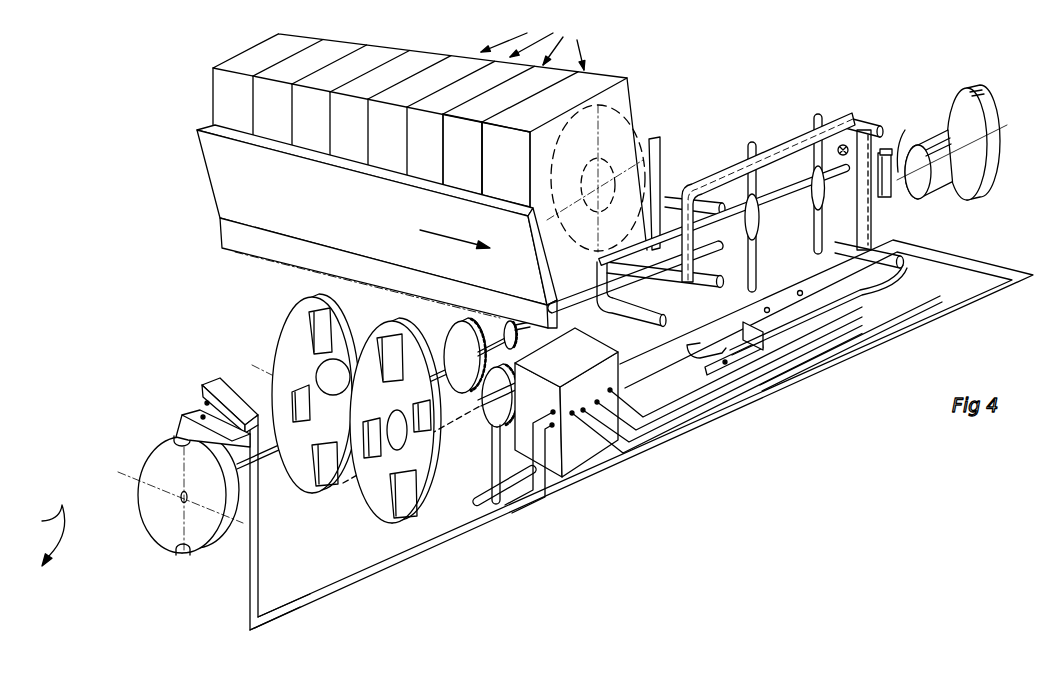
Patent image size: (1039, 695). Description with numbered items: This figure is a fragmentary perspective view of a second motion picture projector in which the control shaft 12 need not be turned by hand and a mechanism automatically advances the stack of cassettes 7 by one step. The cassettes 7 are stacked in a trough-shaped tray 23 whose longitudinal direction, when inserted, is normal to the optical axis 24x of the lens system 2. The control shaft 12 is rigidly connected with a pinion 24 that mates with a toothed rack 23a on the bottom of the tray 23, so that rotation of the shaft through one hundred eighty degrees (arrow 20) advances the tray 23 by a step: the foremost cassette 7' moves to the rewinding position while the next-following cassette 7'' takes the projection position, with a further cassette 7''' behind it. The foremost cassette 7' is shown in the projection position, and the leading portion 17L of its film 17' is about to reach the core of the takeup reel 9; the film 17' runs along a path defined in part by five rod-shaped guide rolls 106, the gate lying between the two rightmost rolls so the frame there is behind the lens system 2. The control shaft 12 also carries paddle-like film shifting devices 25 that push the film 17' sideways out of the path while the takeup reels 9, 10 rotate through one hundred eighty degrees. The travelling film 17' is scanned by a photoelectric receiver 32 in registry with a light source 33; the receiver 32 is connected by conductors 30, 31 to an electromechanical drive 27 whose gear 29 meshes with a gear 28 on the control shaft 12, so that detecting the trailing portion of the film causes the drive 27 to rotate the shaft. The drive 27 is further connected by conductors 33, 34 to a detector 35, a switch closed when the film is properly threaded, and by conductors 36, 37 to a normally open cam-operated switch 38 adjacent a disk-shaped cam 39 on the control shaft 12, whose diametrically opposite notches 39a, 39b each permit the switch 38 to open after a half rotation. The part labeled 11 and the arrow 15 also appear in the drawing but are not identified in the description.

The lens system 2 is at (988, 120).
The cassettes 7 is at (420, 105).
The foremost cassette 7' is at (595, 148).
The next-following cassette 7'' is at (506, 156).
The cassette 7''' is at (462, 147).
The takeup reel 9 is at (297, 304).
The takeup reel 10 is at (368, 324).
The reel hub 11 is at (318, 378).
The control shaft 12 is at (371, 419).
The feed direction arrow 15 is at (430, 230).
The film 17' is at (768, 194).
The leading portion 17L is at (960, 300).
The arrow 20 is at (40, 535).
The tray 23 is at (223, 185).
The toothed rack 23a is at (521, 322).
The pinion 24 is at (494, 314).
The optical axis 24x is at (918, 139).
The film shifting devices 25 is at (749, 142).
The electromechanical drive 27 is at (583, 455).
The gear 28 is at (450, 345).
The gear 29 is at (480, 405).
The conductor 30 is at (771, 389).
The conductor 31 is at (810, 380).
The photoelectric receiver 32 is at (885, 152).
The light source 33 is at (660, 415).
The conductor 34 is at (708, 378).
The detector 35 is at (716, 358).
The conductor 36 is at (340, 589).
The conductor 37 is at (391, 566).
The cam-operated switch 38 is at (205, 414).
The disk-shaped cam 39 is at (145, 467).
The notch 39a is at (175, 436).
The notch 39b is at (180, 552).
The guide rolls 106 is at (676, 193).